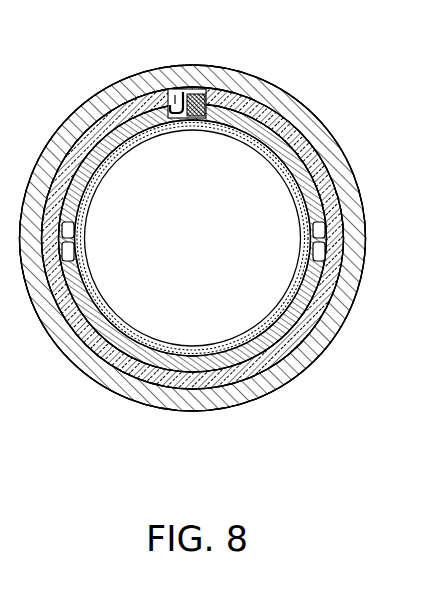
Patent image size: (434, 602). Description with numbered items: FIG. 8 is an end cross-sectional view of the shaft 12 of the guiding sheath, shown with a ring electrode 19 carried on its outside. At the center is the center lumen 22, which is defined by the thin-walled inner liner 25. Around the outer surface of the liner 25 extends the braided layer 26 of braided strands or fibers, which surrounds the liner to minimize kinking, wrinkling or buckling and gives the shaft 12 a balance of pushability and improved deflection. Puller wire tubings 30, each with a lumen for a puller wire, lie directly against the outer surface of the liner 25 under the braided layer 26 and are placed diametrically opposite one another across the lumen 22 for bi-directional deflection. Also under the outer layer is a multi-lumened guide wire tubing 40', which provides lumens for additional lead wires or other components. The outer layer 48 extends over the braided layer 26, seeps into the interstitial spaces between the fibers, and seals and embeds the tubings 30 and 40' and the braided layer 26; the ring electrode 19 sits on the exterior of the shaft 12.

The shaft 12 is at (209, 452).
The ring electrode 19 is at (95, 100).
The center lumen 22 is at (203, 244).
The inner liner 25 is at (305, 290).
The braided layer 26 is at (324, 177).
The puller wire tubing 30 is at (326, 244).
The multi-lumened guide wire tubing 40' is at (272, 92).
The outer layer 48 is at (318, 138).